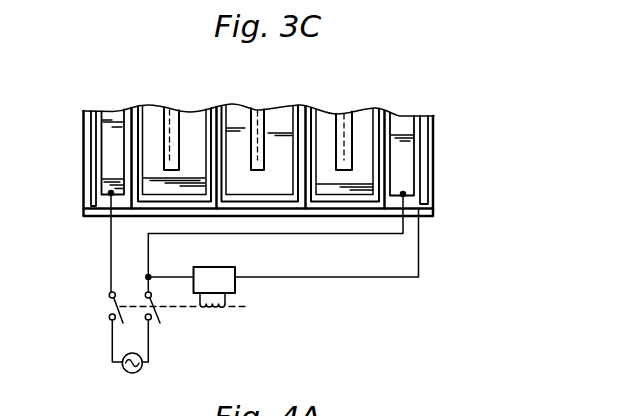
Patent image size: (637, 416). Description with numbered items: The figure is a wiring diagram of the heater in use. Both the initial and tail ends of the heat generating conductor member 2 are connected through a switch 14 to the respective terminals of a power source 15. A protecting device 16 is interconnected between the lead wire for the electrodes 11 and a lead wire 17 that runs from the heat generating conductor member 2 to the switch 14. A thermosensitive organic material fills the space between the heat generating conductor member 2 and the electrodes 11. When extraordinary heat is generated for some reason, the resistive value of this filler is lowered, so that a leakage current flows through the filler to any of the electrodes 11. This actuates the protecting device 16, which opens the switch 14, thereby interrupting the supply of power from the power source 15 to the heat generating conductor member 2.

The heat generating conductor member 2 is at (111, 118).
The electrodes 11 is at (298, 105).
The switch 14 is at (111, 303).
The power source 15 is at (139, 371).
The protecting device 16 is at (217, 276).
The lead wire 17 is at (149, 244).